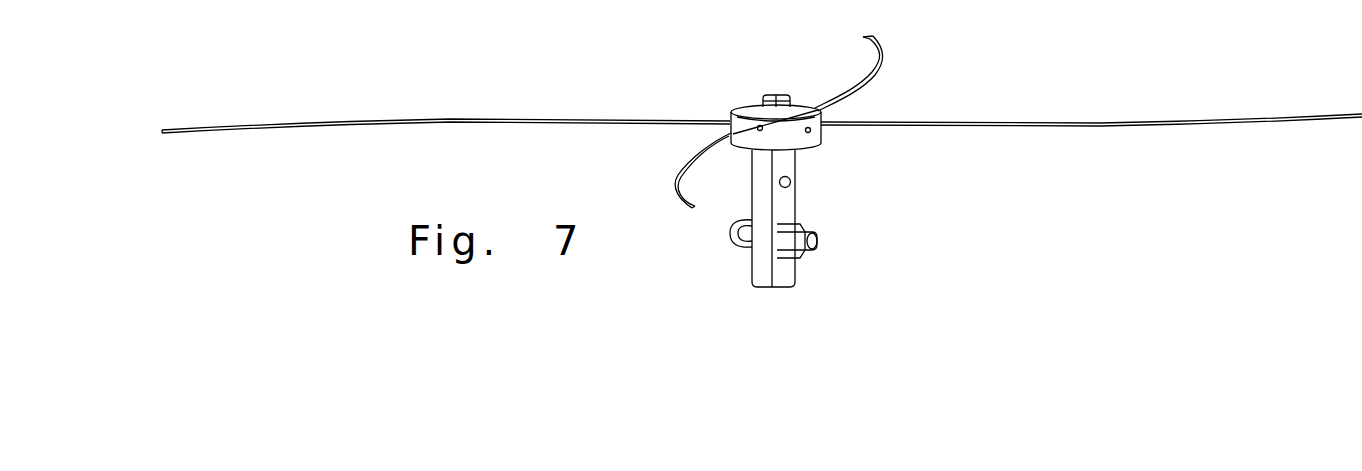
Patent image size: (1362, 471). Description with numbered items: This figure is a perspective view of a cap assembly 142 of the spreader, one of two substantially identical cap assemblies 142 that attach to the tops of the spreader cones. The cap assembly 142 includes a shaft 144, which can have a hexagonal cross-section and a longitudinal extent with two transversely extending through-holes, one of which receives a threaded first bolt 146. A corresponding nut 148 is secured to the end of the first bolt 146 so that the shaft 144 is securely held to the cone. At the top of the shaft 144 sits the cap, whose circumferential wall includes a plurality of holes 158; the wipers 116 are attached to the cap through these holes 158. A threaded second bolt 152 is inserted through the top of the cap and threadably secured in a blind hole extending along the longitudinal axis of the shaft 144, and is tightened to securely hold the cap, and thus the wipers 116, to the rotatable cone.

The wipers 116 is at (883, 48).
The cap assembly 142 is at (962, 90).
The shaft 144 is at (785, 272).
The first bolt 146 is at (742, 249).
The nut 148 is at (786, 231).
The second bolt 152 is at (772, 95).
The holes 158 is at (810, 130).